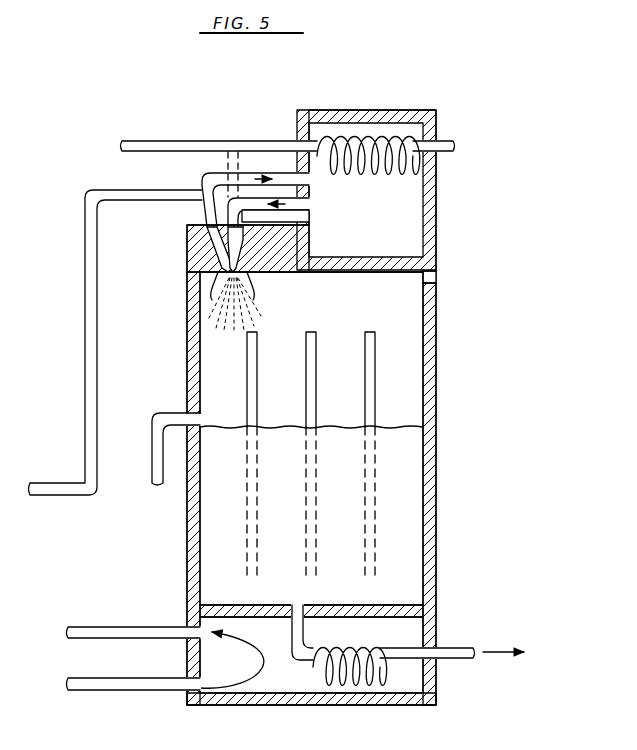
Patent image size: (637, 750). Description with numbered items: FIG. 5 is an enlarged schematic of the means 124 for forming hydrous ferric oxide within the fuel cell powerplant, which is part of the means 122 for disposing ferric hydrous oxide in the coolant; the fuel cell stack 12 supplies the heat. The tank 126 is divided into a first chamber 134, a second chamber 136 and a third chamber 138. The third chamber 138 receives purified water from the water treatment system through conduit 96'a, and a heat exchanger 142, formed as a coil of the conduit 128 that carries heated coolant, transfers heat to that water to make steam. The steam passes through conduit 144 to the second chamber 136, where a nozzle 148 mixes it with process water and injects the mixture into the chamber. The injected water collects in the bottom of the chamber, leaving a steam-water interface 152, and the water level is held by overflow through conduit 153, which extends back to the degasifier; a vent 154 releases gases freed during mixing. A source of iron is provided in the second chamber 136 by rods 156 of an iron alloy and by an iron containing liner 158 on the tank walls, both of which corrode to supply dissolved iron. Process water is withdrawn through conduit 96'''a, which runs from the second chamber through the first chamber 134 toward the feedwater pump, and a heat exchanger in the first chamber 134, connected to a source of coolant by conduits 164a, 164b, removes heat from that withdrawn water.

The fuel cell stack 12 is at (480, 397).
The conduit 96'a is at (256, 191).
The conduit 96'''a is at (435, 644).
The means for disposing ferric hydrous oxide in the coolant 122 is at (472, 170).
The means for forming ferric hydrous oxide 124 is at (437, 227).
The tank 126 is at (437, 478).
The conduit 128 is at (447, 144).
The first chamber 134 is at (253, 674).
The second chamber 136 is at (326, 322).
The third chamber 138 is at (386, 207).
The heat exchanger 142 is at (340, 168).
The conduit 144 is at (292, 200).
The nozzle 148 is at (252, 250).
The steam-water interface 152 is at (413, 425).
The conduit 153 is at (174, 413).
The vent 154 is at (437, 279).
The rods 156 is at (376, 340).
The iron containing liner 158 is at (424, 365).
The conduit 164a is at (79, 678).
The conduit 164b is at (79, 626).